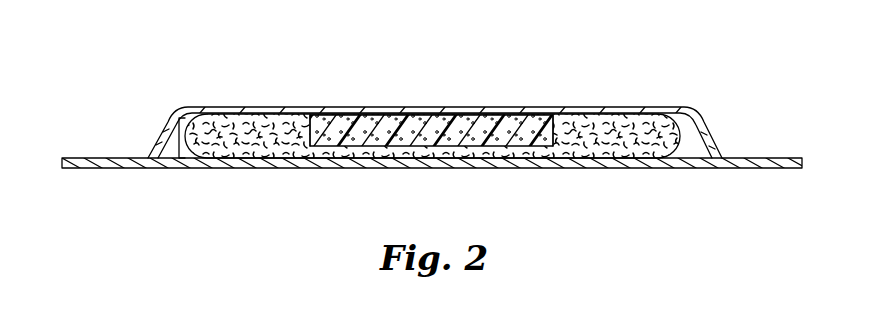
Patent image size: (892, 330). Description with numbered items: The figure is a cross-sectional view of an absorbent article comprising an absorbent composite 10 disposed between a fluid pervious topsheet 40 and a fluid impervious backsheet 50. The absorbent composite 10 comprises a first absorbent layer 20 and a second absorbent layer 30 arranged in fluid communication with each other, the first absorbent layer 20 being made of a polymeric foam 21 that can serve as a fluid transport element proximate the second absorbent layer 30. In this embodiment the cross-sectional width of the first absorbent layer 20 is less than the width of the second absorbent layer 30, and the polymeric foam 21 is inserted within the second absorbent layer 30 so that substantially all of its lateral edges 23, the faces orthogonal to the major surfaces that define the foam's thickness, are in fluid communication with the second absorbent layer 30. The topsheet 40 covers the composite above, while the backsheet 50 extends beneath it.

The absorbent composite 10 is at (178, 140).
The first absorbent layer 20 is at (486, 111).
The polymeric foam 21 is at (428, 127).
The lateral edges 23 is at (306, 116).
The second absorbent layer 30 is at (361, 152).
The fluid pervious topsheet 40 is at (645, 112).
The fluid impervious backsheet 50 is at (466, 165).